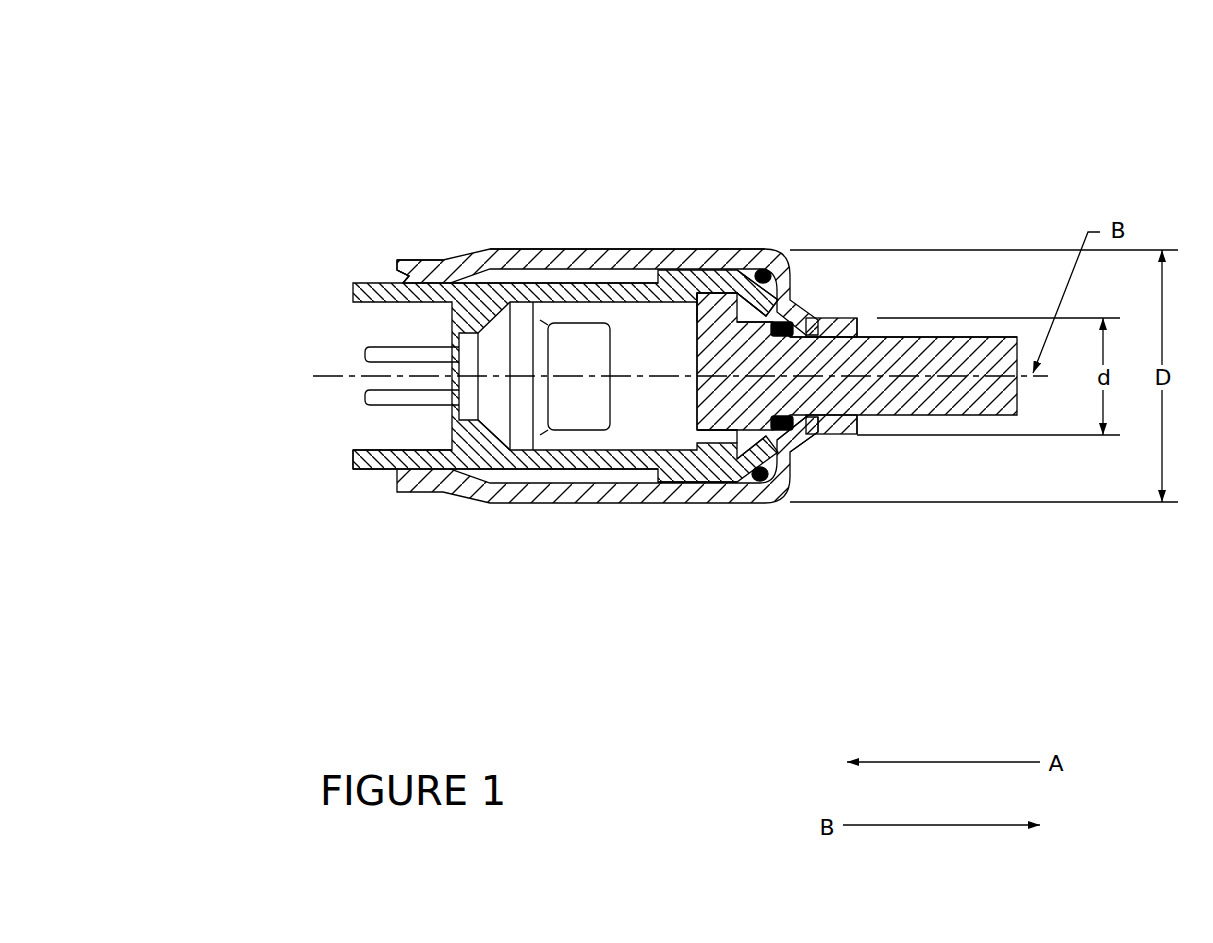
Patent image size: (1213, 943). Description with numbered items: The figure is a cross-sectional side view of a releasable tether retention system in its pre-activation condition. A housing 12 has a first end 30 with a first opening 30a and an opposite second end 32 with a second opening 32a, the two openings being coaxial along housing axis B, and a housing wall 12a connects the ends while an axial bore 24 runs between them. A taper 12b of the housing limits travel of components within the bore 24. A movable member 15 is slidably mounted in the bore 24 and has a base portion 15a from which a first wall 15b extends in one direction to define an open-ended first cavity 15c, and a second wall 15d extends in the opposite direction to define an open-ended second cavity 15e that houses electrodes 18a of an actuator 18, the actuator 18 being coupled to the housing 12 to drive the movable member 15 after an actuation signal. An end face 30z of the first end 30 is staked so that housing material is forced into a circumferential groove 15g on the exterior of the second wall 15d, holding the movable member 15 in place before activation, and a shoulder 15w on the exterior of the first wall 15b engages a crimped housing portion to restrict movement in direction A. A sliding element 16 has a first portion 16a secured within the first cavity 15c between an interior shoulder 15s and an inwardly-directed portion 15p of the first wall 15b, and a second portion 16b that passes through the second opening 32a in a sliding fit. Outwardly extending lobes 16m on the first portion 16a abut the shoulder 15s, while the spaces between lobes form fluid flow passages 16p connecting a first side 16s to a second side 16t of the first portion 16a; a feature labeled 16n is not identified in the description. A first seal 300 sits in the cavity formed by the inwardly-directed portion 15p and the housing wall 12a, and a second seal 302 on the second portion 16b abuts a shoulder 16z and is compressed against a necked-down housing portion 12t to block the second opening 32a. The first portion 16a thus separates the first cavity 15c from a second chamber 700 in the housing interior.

The housing 12 is at (487, 507).
The housing wall 12a is at (562, 253).
The taper 12b is at (420, 260).
The tapered portion of housing 12t is at (810, 447).
The movable member 15 is at (349, 280).
The base portion 15a is at (470, 447).
The first wall 15b is at (550, 473).
The first cavity 15c is at (650, 487).
The second wall 15d is at (368, 467).
The second cavity 15e is at (370, 428).
The circumferential groove 15g is at (393, 478).
The inwardly-directed portion of first wall 15p is at (766, 282).
The shoulder 15s is at (688, 467).
The shoulder 15w is at (630, 432).
The sliding element 16 is at (947, 333).
The first portion 16a is at (726, 286).
The second portion 16b is at (987, 355).
The lobes 16m is at (728, 338).
The conductor front edge 16n is at (716, 278).
The fluid flow passages 16p is at (718, 453).
The first side 16s is at (695, 322).
The second side 16t is at (762, 305).
The shoulder 16z is at (790, 320).
The actuator 18 is at (518, 325).
The electrodes 18a is at (363, 398).
The axial bore 24 is at (535, 272).
The first end 30 is at (417, 277).
The first opening 30a is at (390, 273).
The end face 30z is at (398, 277).
The second end 32 is at (865, 447).
The second opening 32a is at (868, 422).
The first seal 300 is at (758, 262).
The second seal 302 is at (800, 437).
The second chamber 700 is at (743, 453).